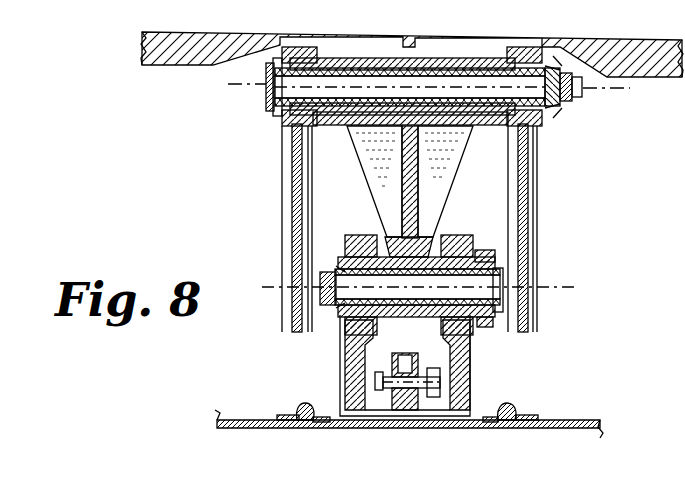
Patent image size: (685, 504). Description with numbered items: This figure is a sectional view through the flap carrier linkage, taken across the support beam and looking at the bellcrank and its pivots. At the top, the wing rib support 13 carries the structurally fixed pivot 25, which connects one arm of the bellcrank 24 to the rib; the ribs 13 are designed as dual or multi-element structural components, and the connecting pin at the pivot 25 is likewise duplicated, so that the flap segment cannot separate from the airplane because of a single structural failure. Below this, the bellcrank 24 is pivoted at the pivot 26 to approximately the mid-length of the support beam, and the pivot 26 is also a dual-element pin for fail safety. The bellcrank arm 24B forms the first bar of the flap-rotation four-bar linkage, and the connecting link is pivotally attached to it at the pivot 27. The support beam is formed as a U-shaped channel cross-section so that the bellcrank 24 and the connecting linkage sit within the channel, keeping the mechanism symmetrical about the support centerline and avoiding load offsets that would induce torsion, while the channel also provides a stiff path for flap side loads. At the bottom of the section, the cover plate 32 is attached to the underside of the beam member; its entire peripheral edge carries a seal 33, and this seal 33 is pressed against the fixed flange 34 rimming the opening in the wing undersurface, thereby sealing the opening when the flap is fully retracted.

The wing rib support 13 is at (290, 210).
The bellcrank 24 is at (448, 191).
The bellcrank arm 24B is at (490, 335).
The structurally fixed pivot 25 is at (583, 90).
The pivot 26 is at (505, 285).
The pivot 27 is at (445, 379).
The cover plate 32 is at (392, 428).
The seal 33 is at (318, 405).
The fixed flange 34 is at (298, 414).